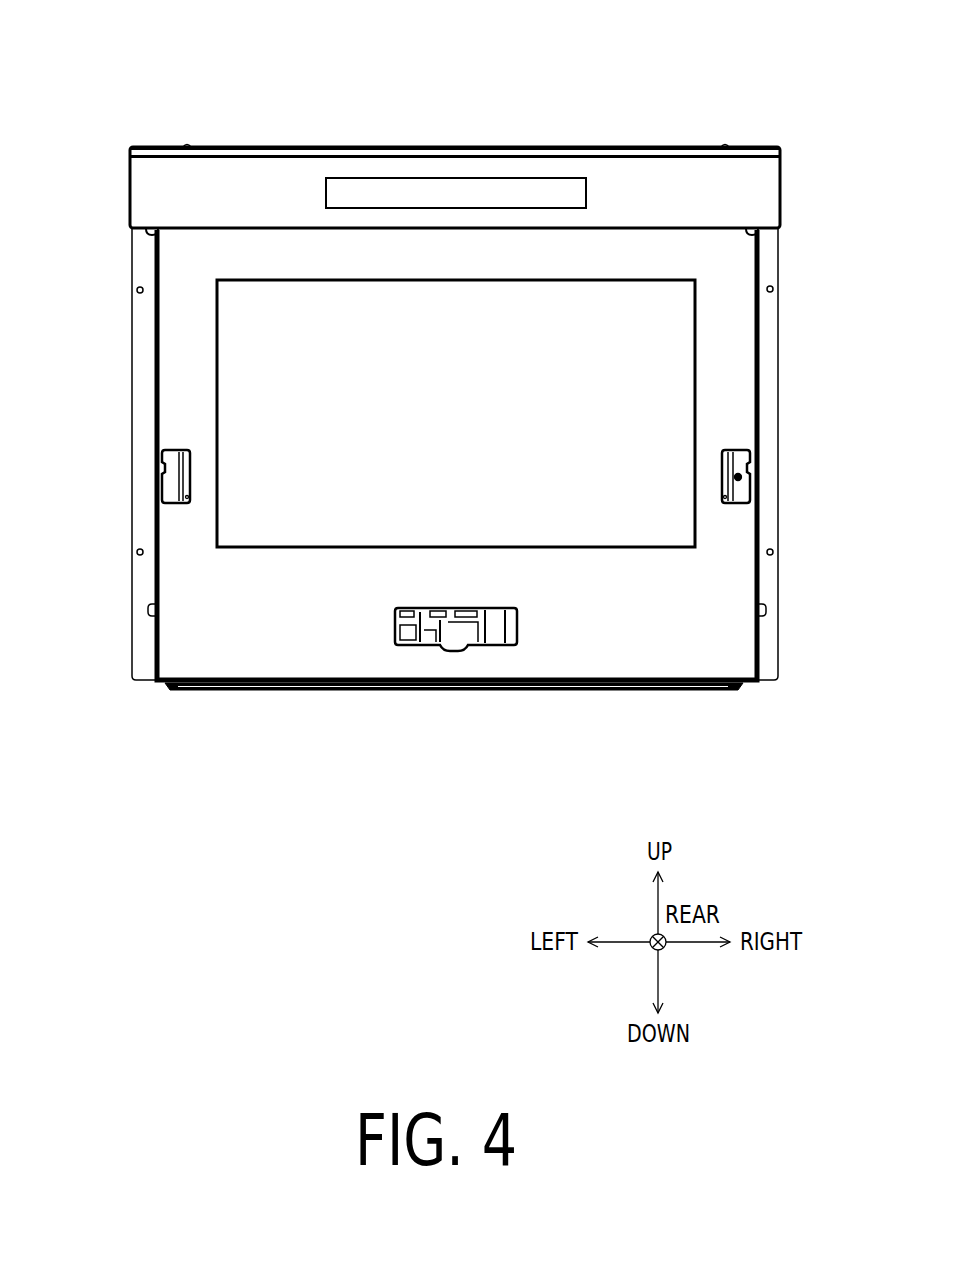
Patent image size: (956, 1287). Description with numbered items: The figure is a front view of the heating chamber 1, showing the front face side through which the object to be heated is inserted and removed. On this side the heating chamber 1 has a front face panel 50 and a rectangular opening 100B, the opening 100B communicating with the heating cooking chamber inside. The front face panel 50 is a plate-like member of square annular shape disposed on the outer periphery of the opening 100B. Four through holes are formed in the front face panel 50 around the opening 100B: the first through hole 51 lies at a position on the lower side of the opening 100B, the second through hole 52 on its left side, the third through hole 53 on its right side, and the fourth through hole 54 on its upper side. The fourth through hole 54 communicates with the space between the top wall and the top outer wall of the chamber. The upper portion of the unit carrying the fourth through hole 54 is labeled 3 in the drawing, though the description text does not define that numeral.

The heating chamber 1 is at (172, 80).
The housing upper cover 3 is at (738, 183).
The front face panel 50 is at (173, 329).
The first through hole 51 is at (460, 637).
The second through hole 52 is at (167, 482).
The third through hole 53 is at (740, 477).
The fourth through hole 54 is at (562, 178).
The opening 100B is at (255, 325).